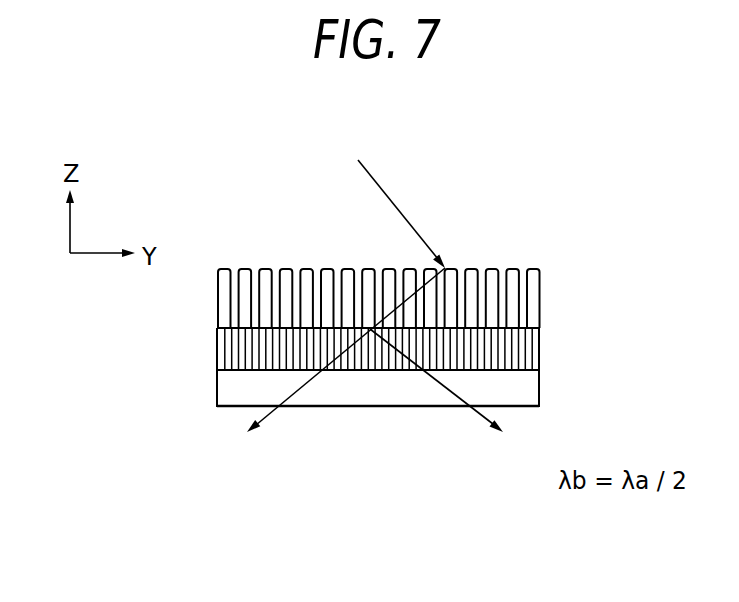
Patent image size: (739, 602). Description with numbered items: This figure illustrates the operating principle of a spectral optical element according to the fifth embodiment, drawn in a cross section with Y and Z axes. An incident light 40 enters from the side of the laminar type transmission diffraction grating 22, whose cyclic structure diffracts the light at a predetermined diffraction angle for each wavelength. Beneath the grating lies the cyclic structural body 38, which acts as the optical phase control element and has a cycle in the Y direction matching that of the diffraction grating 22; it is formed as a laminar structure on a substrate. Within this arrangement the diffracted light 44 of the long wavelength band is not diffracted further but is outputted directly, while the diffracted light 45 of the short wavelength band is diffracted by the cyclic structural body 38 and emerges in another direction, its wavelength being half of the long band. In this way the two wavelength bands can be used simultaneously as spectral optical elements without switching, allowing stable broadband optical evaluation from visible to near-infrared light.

The laminar type transmission diffraction grating 22 is at (531, 270).
The cyclic structural body 38 is at (530, 352).
The incident light 40 is at (392, 201).
The diffracted light of the long wavelength band 44 is at (282, 403).
The diffracted light of the short wavelength band 45 is at (477, 411).